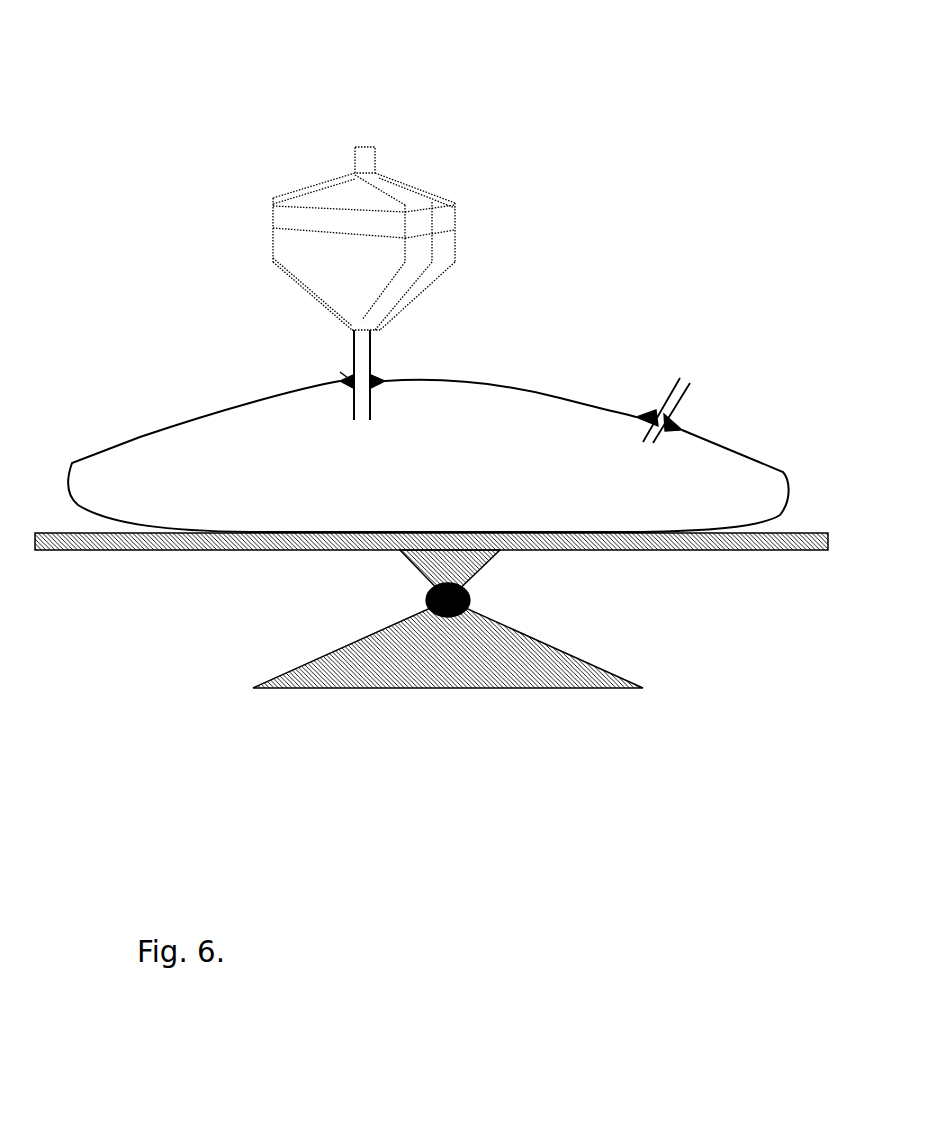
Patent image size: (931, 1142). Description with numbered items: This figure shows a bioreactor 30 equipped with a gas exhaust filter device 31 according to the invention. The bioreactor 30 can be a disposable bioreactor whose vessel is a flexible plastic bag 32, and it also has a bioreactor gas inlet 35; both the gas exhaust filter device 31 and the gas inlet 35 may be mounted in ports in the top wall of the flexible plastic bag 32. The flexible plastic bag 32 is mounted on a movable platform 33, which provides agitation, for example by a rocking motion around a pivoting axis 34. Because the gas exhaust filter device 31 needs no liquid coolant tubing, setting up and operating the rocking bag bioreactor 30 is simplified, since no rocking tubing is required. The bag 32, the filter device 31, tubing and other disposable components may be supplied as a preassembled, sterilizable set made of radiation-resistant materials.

The bioreactor 30 is at (478, 126).
The gas exhaust filter device 31 is at (273, 250).
The flexible plastic bag 32 is at (503, 382).
The movable platform 33 is at (253, 552).
The pivoting axis 34 is at (470, 593).
The bioreactor gas inlet 35 is at (687, 390).